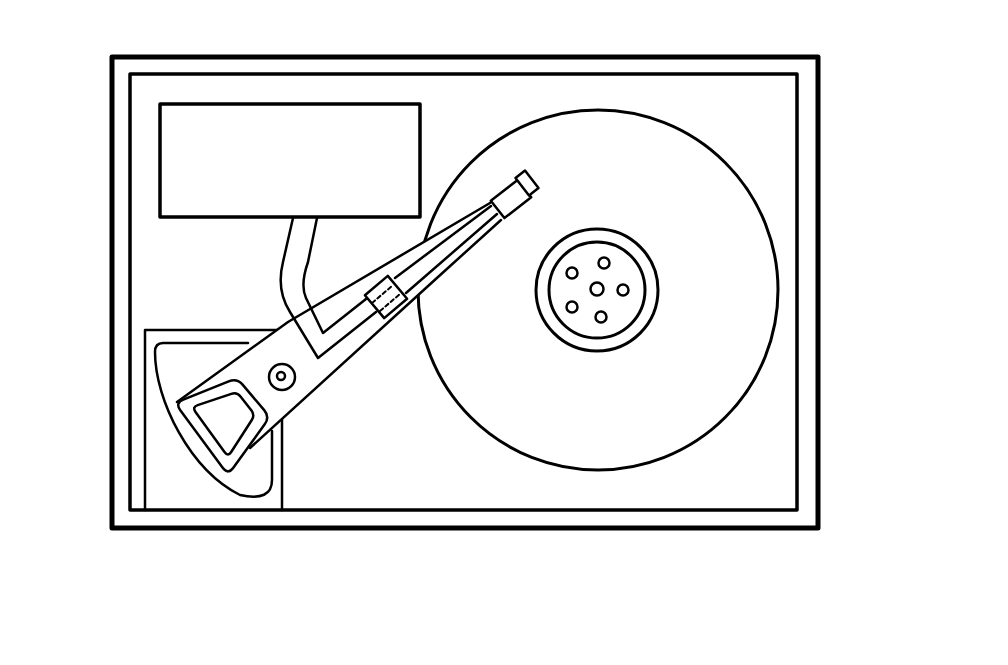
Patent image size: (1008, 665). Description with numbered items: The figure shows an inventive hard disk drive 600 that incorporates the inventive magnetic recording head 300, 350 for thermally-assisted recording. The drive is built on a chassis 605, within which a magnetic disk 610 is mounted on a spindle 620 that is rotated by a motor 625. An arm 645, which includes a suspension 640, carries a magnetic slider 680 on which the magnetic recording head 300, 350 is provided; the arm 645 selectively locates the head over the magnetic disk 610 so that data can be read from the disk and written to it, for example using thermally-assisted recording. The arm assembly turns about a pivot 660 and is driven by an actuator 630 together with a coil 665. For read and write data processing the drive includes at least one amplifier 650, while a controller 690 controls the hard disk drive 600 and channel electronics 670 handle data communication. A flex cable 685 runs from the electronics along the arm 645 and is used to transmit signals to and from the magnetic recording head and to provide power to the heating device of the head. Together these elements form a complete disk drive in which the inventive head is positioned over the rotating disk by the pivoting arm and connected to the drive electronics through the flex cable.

The hard disk drive 600 is at (226, 48).
The chassis 605 is at (821, 270).
The magnetic disk 610 is at (620, 428).
The spindle 620 is at (605, 283).
The motor 625 is at (645, 297).
The actuator 630 is at (183, 495).
The suspension 640 is at (436, 279).
The arm 645 is at (346, 367).
The amplifier 650 is at (410, 306).
The pivot 660 is at (289, 386).
The coil 665 is at (193, 434).
The channel electronics 670 is at (290, 160).
The magnetic slider 680 is at (584, 189).
The flex cable 685 is at (280, 277).
The controller 690 is at (247, 175).
The magnetic recording head 300 is at (597, 170).
The magnetic recording head 350 is at (531, 176).